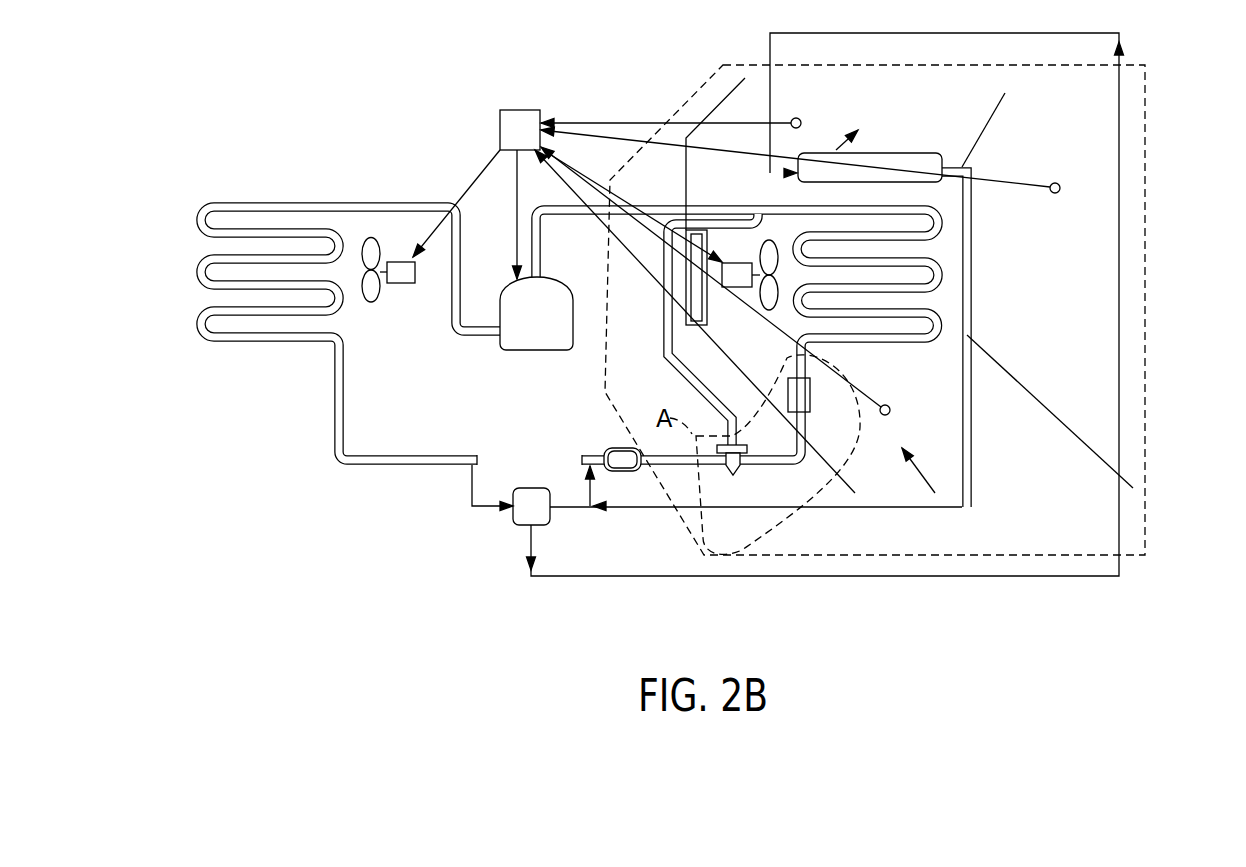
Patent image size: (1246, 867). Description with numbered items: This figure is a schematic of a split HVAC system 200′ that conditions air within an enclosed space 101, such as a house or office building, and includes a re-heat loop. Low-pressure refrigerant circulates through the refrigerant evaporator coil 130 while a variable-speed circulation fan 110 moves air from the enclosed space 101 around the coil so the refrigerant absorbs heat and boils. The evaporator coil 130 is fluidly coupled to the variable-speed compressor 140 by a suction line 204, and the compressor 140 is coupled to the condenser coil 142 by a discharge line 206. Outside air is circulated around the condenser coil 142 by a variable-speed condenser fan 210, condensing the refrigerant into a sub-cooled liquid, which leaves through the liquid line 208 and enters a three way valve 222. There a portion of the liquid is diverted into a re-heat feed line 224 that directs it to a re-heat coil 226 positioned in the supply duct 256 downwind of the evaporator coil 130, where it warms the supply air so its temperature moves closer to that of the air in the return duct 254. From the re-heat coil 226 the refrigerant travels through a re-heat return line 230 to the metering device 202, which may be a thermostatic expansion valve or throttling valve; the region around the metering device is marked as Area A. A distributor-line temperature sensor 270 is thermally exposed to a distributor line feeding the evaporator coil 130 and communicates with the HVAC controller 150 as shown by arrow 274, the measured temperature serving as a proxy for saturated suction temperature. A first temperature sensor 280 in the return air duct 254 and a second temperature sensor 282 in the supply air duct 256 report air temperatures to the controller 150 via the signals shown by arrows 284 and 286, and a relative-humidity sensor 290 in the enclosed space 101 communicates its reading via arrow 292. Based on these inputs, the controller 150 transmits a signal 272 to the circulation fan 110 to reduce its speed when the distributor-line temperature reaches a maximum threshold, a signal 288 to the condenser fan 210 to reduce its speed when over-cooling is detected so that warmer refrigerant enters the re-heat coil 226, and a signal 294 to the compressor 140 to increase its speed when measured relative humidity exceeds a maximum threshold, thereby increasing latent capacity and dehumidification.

The enclosed space 101 is at (1148, 305).
The variable-speed circulation fan 110 is at (739, 290).
The refrigerant evaporator coil 130 is at (912, 346).
The variable-speed compressor 140 is at (533, 352).
The condenser coil 142 is at (262, 342).
The HVAC controller 150 is at (500, 120).
The split HVAC system 200′ is at (254, 173).
The metering device 202 is at (735, 478).
The suction line 204 is at (565, 216).
The discharge line 206 is at (462, 218).
The liquid line 208 is at (463, 470).
The variable-speed condenser fan 210 is at (393, 285).
The three way valve 222 is at (511, 526).
The re-heat feed line 224 is at (836, 578).
The re-heat coil 226 is at (932, 183).
The re-heat return line 230 is at (972, 428).
The return air duct 254 is at (850, 497).
The supply duct 256 is at (992, 118).
The distributor-line temperature sensor 270 is at (812, 398).
The signal 272 is at (713, 242).
The arrow 274 is at (722, 352).
The first temperature sensor 280 is at (885, 418).
The second temperature sensor 282 is at (801, 123).
The arrow 284 is at (866, 395).
The arrow 286 is at (762, 123).
The signal 288 is at (472, 184).
The relative-humidity sensor 290 is at (1060, 194).
The arrow 292 is at (1010, 187).
The signal 294 is at (515, 250).